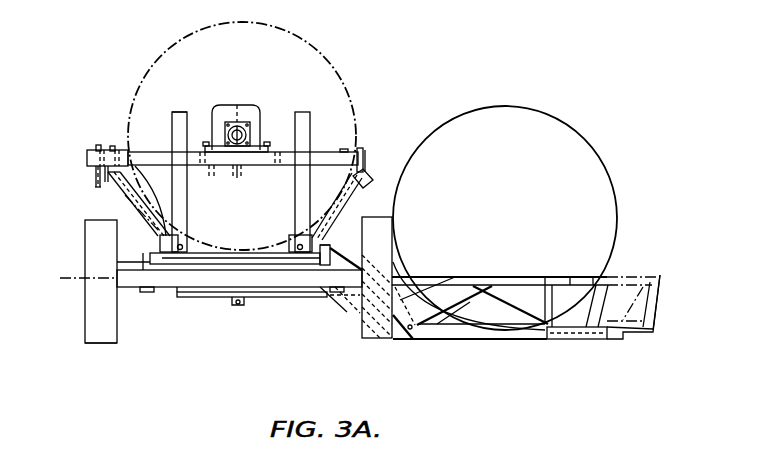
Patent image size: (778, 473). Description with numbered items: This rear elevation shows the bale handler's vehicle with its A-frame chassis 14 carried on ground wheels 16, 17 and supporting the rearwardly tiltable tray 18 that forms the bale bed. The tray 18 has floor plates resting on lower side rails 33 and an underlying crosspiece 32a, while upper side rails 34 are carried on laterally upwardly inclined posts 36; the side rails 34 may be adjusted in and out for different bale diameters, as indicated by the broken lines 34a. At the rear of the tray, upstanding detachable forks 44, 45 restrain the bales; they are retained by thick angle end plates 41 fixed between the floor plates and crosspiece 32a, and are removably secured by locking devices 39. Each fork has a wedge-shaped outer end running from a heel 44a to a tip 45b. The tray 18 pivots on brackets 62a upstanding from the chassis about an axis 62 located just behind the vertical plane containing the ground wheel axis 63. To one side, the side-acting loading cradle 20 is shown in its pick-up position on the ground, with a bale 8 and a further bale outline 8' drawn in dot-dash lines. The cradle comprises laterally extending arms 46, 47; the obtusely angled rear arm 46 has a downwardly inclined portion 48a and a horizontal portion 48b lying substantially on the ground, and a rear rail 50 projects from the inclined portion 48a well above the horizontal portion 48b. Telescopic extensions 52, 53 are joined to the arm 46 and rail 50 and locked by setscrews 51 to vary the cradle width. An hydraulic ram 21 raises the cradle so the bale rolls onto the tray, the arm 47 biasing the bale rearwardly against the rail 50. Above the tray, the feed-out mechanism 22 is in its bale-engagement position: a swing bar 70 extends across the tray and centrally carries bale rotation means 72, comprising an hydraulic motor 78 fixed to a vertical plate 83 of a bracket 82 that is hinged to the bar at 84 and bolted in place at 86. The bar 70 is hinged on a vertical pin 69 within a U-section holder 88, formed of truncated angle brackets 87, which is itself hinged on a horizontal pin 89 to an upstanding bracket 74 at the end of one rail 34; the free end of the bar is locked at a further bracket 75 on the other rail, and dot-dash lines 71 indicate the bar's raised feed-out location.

The bale 8 is at (512, 218).
The wheel envelope 8' is at (242, 136).
The A-frame chassis 14 is at (184, 309).
The ground wheel 16 is at (378, 262).
The ground wheel 17 is at (90, 320).
The rearwardly tiltable tray 18 is at (375, 171).
The bale loading cradle 20 is at (595, 352).
The hydraulic ram 21 is at (356, 322).
The feed-out mechanism 22 is at (207, 94).
The crosspiece 32a is at (266, 298).
The lower side rail 33 is at (276, 288).
The upper side rail 34 is at (114, 189).
The broken lines 34a is at (112, 191).
The post 36 is at (110, 222).
The locking device 39 is at (183, 237).
The angle end plate 41 is at (201, 289).
The fork 44 is at (305, 135).
The heel 44a is at (312, 244).
The fork 45 is at (173, 130).
The fork tip 45b is at (182, 111).
The rear arm 46 is at (445, 350).
The arm 47 is at (396, 340).
The downwardly inclined portion 48a is at (412, 288).
The horizontal portion 48b is at (483, 339).
The rear rail 50 is at (540, 277).
The setscrew 51 is at (553, 276).
The arm extension 52 is at (563, 340).
The rail extension 53 is at (581, 275).
The pivot axis 62 is at (117, 274).
The bracket 62a is at (143, 290).
The ground wheel axis 63 is at (80, 281).
The pin 69 is at (94, 147).
The swing bar 70 is at (345, 152).
The dot-dash lines 71 is at (360, 149).
The bale rotation means 72 is at (246, 92).
The upstanding bracket 74 is at (112, 146).
The further bracket 75 is at (366, 156).
The hydraulic motor 78 is at (235, 168).
The bracket 82 is at (252, 148).
The vertical plate 83 is at (250, 128).
The hinge 84 is at (265, 148).
The bolt 86 is at (210, 166).
The truncated angle bracket 87 is at (88, 151).
The U-section holder 88 is at (87, 180).
The pin 89 is at (135, 168).